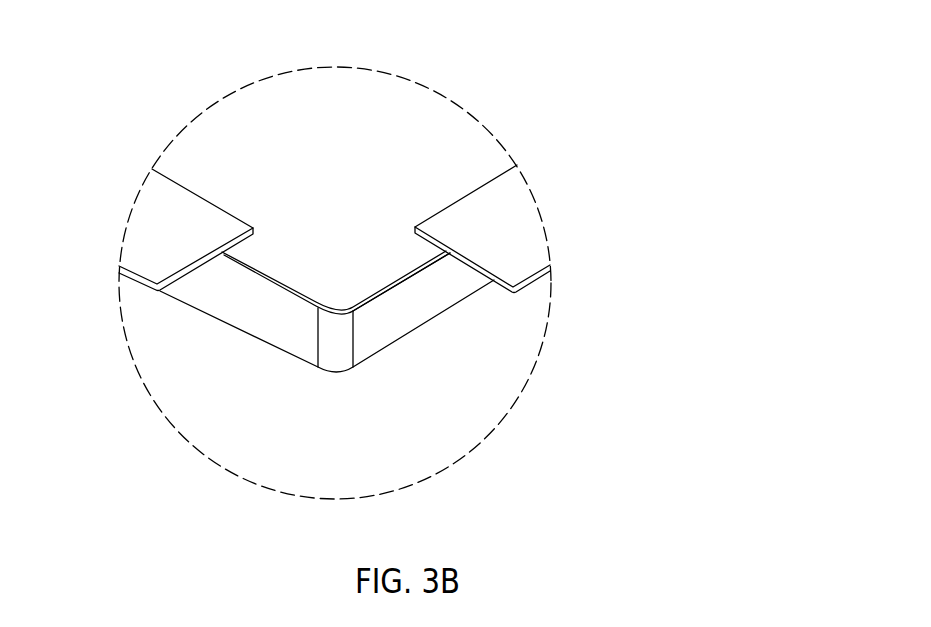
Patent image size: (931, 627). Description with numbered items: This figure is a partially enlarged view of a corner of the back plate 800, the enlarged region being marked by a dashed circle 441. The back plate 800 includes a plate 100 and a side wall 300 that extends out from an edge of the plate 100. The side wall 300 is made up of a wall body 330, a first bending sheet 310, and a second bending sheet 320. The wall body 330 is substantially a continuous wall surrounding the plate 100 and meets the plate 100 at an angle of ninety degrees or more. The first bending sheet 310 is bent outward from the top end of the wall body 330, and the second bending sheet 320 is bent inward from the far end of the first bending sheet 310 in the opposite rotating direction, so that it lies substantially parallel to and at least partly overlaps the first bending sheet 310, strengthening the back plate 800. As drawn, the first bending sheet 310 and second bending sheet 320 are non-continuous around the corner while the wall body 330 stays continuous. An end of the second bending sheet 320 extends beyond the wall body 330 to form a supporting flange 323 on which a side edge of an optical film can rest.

The enlarged detail region 441 is at (428, 85).
The plate 100 is at (463, 187).
The back plate 800 is at (440, 305).
The side wall 300 is at (428, 354).
The second bending sheet 320 is at (496, 277).
The first bending sheet 310 is at (496, 277).
The wall body 330 is at (450, 293).
The supporting flange 323 is at (413, 283).